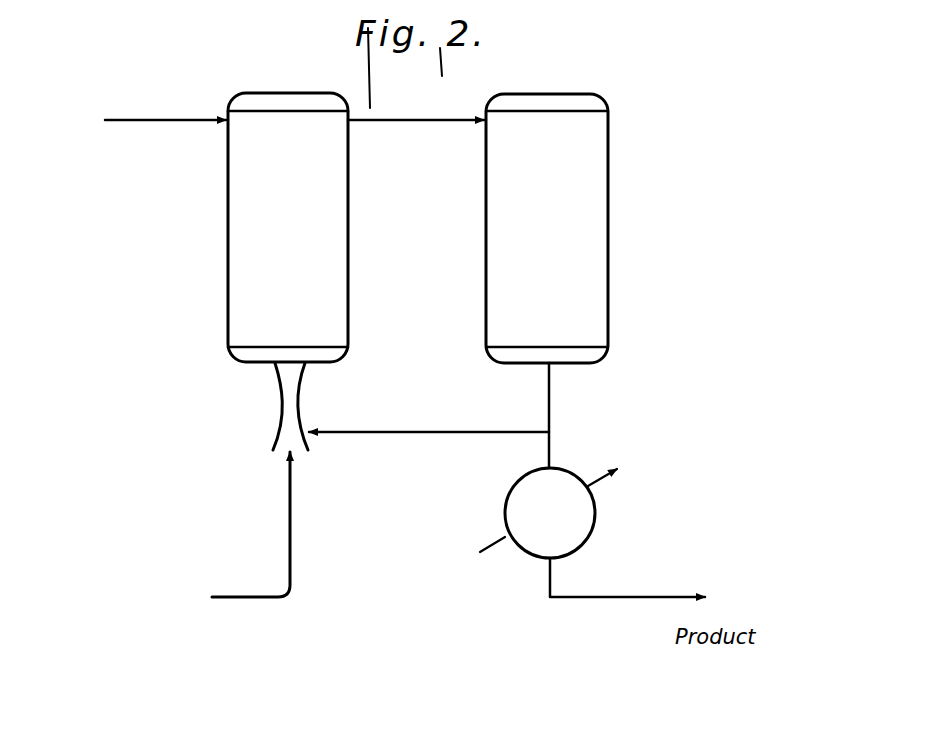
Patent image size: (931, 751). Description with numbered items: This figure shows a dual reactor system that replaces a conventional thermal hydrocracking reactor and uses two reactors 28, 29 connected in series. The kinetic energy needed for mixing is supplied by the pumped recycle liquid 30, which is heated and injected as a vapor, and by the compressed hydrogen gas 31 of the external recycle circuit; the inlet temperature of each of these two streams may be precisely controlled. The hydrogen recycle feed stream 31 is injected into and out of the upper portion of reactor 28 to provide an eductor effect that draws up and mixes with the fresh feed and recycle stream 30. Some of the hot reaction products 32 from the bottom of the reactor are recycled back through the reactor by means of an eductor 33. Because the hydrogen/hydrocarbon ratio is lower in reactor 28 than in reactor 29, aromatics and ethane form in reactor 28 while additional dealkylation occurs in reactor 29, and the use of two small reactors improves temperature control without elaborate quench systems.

The reactor 28 is at (302, 239).
The reactor 29 is at (564, 241).
The pumped recycle liquid 30 is at (294, 580).
The compressed hydrogen gas external recycle circuit 31 is at (163, 122).
The hot reaction products 32 is at (412, 434).
The eductor 33 is at (287, 400).